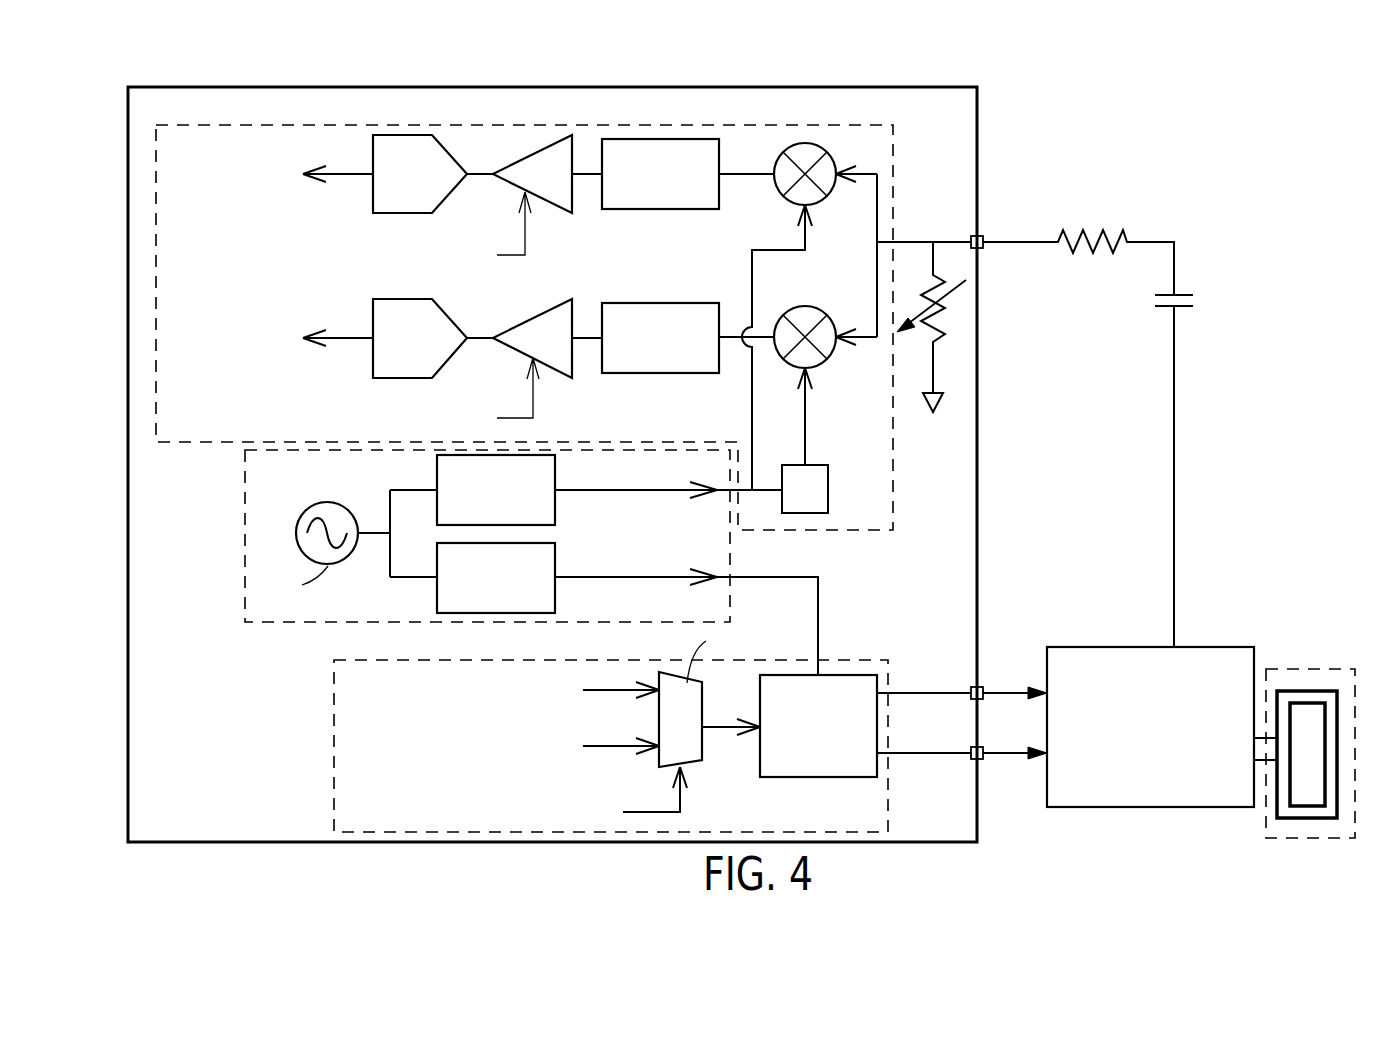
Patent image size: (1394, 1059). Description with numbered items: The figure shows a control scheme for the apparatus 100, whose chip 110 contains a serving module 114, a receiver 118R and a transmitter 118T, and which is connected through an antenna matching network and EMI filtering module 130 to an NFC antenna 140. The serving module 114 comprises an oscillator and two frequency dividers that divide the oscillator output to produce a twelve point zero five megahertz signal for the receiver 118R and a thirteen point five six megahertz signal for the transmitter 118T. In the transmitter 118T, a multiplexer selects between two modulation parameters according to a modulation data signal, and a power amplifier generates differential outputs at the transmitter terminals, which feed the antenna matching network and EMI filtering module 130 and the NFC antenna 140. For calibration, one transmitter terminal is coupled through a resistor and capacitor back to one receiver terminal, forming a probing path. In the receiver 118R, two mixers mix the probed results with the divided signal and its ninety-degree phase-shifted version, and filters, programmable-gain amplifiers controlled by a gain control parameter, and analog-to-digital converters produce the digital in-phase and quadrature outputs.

The apparatus 100 is at (1210, 110).
The chip 110 is at (928, 86).
The serving module 114 is at (243, 518).
The receiver 118R is at (845, 125).
The transmitter 118T is at (333, 762).
The antenna matching network and EMI filtering module 130 is at (1226, 647).
The NFC antenna 140 is at (1308, 670).